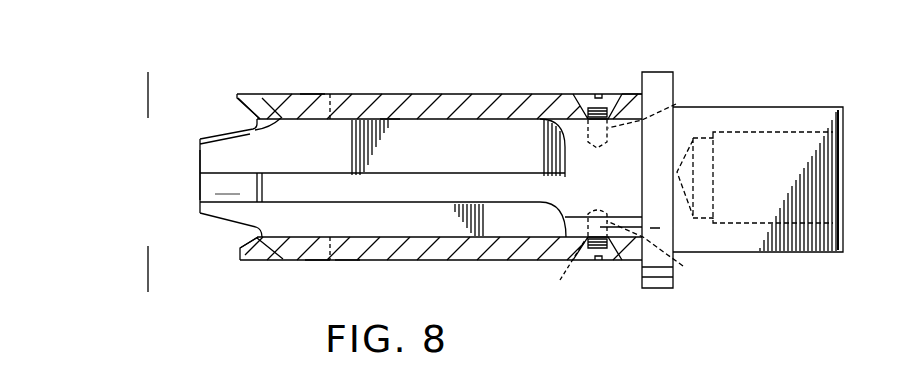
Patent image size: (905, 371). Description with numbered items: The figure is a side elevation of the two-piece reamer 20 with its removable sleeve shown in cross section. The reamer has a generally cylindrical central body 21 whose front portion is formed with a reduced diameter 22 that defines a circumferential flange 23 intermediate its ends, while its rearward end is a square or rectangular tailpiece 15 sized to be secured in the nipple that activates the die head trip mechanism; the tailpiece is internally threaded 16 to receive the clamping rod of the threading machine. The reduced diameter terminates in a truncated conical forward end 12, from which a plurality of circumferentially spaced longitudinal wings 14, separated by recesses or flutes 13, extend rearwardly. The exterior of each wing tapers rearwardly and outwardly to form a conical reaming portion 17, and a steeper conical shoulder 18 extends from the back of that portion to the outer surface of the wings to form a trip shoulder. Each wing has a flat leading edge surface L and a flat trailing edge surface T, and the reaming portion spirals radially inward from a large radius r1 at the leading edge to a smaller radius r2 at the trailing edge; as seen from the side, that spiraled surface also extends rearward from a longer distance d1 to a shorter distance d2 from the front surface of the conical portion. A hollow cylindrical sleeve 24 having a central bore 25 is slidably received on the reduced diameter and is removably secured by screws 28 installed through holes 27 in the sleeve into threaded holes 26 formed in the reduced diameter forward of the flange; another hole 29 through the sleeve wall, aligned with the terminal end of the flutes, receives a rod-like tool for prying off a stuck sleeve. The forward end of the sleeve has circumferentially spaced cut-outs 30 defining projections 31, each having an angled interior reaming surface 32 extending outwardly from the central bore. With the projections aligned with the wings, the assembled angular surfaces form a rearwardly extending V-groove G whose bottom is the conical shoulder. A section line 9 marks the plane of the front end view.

The section line 9 is at (168, 92).
The truncated conical forward end 12 is at (197, 160).
The flutes 13 is at (530, 130).
The wings 14 is at (433, 100).
The tailpiece 15 is at (765, 107).
The internal thread 16 is at (845, 143).
The conical reaming portion 17 is at (220, 134).
The conical shoulder 18 is at (263, 184).
The reamer 20 is at (385, 54).
The central body 21 is at (496, 119).
The reduced diameter 22 is at (612, 110).
The circumferential flange 23 is at (658, 75).
The sleeve 24 is at (345, 259).
The central bore 25 is at (392, 120).
The threaded holes 26 is at (676, 104).
The holes 27 is at (587, 112).
The screws 28 is at (608, 100).
The hole 29 is at (571, 270).
The cut-outs 30 is at (336, 101).
The projections 31 is at (313, 95).
The reaming surface 32 is at (256, 100).
The V-groove G is at (247, 116).
The trailing edge surface T is at (347, 173).
The leading edge surface L is at (362, 203).
The longer distance d1 is at (257, 152).
The shorter distance d2 is at (250, 206).
The large radius r1 is at (260, 204).
The smaller radius r2 is at (262, 170).